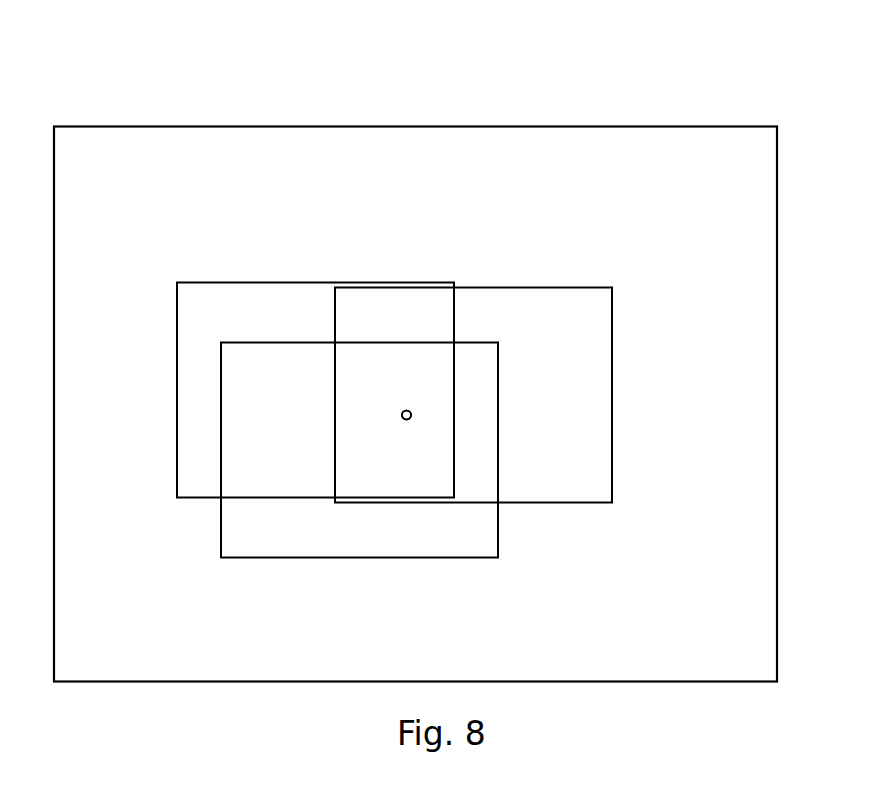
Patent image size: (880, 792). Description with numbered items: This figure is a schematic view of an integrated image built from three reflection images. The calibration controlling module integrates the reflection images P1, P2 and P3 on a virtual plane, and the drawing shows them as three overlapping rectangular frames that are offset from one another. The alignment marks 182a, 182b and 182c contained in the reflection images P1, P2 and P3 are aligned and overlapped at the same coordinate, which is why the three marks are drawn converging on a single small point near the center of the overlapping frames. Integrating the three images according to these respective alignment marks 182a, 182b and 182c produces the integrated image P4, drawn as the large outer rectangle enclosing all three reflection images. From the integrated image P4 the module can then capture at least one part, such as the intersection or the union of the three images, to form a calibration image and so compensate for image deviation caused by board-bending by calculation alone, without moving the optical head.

The reflection image P1 is at (277, 557).
The reflection image P2 is at (312, 282).
The reflection image P3 is at (508, 288).
The integrated image P4 is at (610, 127).
The alignment mark 182a is at (402, 413).
The alignment mark 182b is at (406, 419).
The alignment mark 182c is at (409, 411).